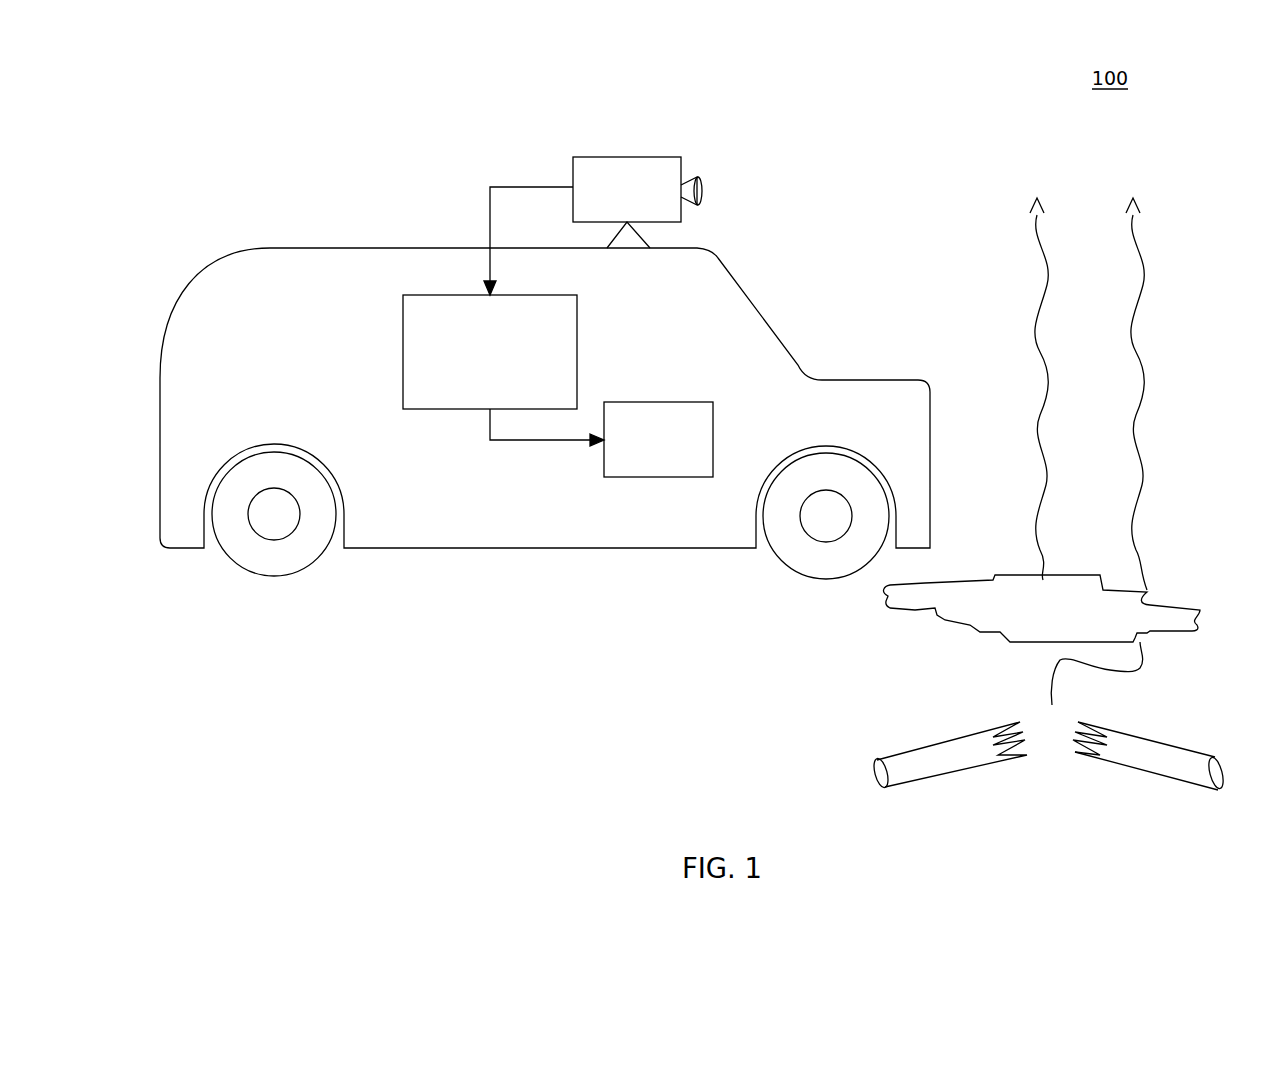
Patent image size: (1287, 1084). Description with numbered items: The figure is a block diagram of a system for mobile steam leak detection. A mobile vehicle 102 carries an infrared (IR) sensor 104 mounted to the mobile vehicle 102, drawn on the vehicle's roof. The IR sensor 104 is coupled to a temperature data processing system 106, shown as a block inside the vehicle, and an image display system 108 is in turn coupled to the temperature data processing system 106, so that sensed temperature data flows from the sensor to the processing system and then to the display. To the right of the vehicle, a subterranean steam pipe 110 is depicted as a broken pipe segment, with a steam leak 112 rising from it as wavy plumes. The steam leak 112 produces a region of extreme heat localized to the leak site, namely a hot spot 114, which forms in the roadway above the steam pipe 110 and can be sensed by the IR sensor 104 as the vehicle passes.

The mobile vehicle 102 is at (297, 247).
The infrared (IR) sensor 104 is at (655, 157).
The temperature data processing system 106 is at (577, 346).
The image display system 108 is at (713, 440).
The subterranean steam pipe 110 is at (1145, 738).
The steam leak 112 is at (1135, 290).
The hot spot 114 is at (980, 633).